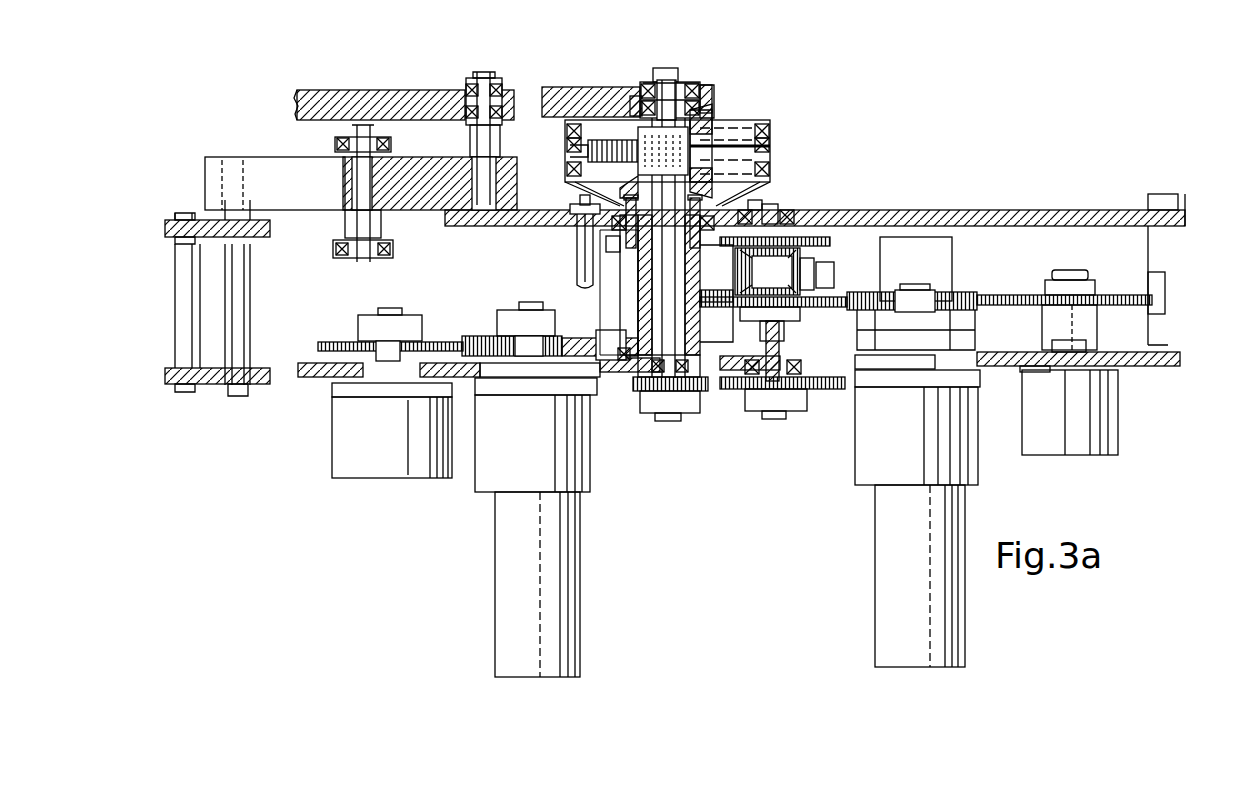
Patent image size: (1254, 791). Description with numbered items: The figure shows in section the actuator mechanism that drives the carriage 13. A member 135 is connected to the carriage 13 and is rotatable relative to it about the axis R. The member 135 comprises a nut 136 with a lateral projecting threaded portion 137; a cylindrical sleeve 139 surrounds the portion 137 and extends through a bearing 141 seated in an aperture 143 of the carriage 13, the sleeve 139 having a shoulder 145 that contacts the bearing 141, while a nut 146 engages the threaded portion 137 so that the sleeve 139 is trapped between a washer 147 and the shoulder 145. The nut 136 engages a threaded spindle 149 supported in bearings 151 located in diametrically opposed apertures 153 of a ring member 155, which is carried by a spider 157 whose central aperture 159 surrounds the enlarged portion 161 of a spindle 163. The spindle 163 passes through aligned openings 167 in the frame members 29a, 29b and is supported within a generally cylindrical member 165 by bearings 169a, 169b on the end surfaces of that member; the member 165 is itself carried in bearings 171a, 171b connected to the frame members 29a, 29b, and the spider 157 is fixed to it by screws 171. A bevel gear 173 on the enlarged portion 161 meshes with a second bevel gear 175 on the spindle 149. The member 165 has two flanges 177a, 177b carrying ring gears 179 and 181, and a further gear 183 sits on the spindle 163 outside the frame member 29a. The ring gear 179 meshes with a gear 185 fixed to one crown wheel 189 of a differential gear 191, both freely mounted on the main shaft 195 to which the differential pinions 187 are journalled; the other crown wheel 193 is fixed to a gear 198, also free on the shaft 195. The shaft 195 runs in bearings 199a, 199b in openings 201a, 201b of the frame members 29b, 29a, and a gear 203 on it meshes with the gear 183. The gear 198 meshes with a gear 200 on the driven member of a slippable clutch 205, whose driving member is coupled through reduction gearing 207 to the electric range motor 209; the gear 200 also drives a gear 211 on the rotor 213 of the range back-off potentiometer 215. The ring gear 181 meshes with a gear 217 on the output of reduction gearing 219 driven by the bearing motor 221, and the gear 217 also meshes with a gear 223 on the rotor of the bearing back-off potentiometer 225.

The carriage 13 is at (340, 100).
The frame member 29a is at (205, 386).
The frame member 29b is at (898, 212).
The member 135 is at (675, 80).
The nut 136 is at (655, 118).
The lateral projecting threaded portion 137 is at (700, 104).
The cylindrical sleeve 139 is at (700, 92).
The bearing 141 is at (652, 84).
The aperture 143 is at (640, 96).
The shoulder 145 is at (638, 122).
The nut 146 is at (672, 76).
The washer 147 is at (688, 92).
The threaded spindle 149 is at (568, 157).
The bearings 151 is at (568, 140).
The apertures 153 is at (568, 183).
The ring member 155 is at (768, 130).
The spider 157 is at (755, 212).
The central aperture 159 is at (708, 176).
The enlarged portion 161 is at (620, 190).
The spindle 163 is at (676, 285).
The generally cylindrical member 165 is at (646, 298).
The aligned openings 167 is at (570, 203).
The bearing 169a is at (652, 402).
The bearing 169b is at (628, 292).
The screws 171 is at (705, 203).
The bearing 171a is at (628, 372).
The bearing 171b is at (612, 240).
The bevel gear 173 is at (770, 158).
The bevel gear 175 is at (706, 130).
The flange 177a is at (583, 256).
The flange 177b is at (620, 330).
The ring gear 179 is at (606, 246).
The ring gear 181 is at (755, 319).
The gear 183 is at (700, 391).
The gear 185 is at (832, 241).
The differential pinions 187 is at (767, 271).
The crown wheel 189 is at (815, 268).
The differential gear 191 is at (844, 280).
The crown wheel 193 is at (816, 284).
The main shaft 195 is at (781, 331).
The gear 198 is at (759, 331).
The bearing 199a is at (792, 210).
The bearing 199b is at (795, 362).
The gear 200 is at (858, 308).
The opening 201a is at (790, 214).
The opening 201b is at (815, 364).
The gear 203 is at (810, 392).
The slippable clutch 205 is at (968, 268).
The reduction gearing 207 is at (856, 462).
The electric range motor 209 is at (878, 597).
The gear 211 is at (1100, 294).
The rotor 213 is at (1085, 331).
The range back-off potentiometer 215 is at (1120, 430).
The gear 217 is at (490, 335).
The reduction gearing 219 is at (478, 482).
The bearing motor 221 is at (497, 556).
The gear 223 is at (444, 342).
The bearing back-off potentiometer 225 is at (332, 433).
The axis R is at (666, 68).